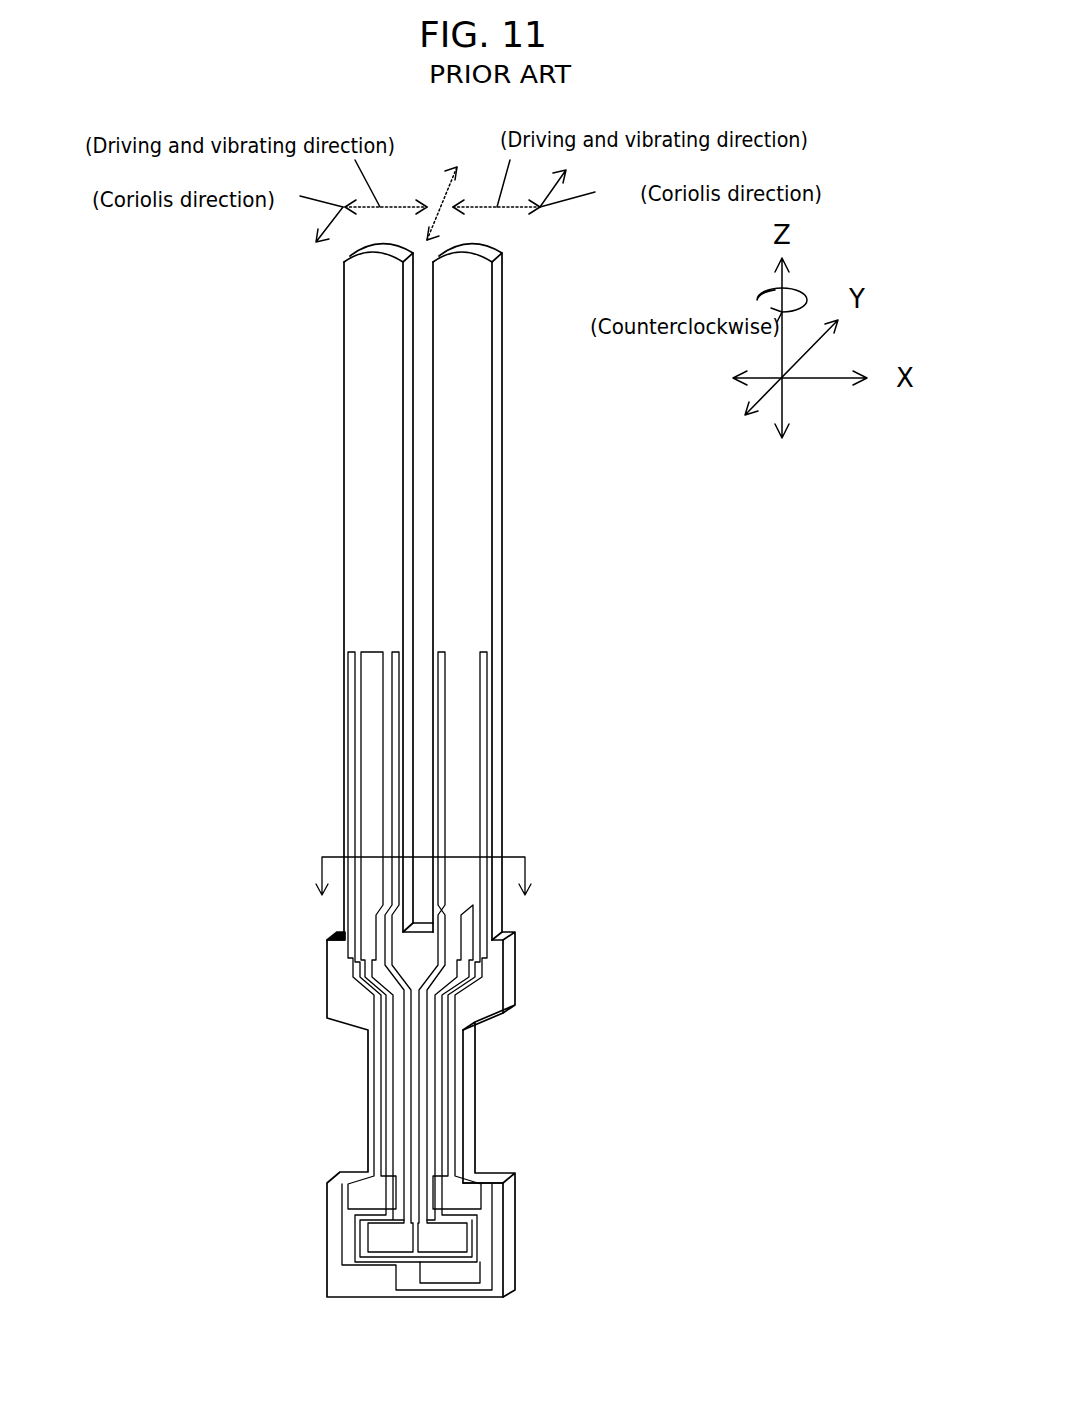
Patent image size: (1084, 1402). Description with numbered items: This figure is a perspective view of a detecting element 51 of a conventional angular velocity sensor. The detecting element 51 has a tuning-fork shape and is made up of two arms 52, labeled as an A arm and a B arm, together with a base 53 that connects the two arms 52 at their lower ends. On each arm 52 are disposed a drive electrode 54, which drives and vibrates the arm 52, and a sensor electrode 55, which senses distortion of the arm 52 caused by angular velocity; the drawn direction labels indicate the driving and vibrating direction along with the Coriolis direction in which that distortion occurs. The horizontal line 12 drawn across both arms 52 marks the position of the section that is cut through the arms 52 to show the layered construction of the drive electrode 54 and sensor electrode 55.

The detecting element 51 is at (198, 262).
The arm 52 is at (565, 262).
The base 53 is at (565, 955).
The drive electrode 54 is at (395, 737).
The sensor electrode 55 is at (372, 670).
The section line 12 is at (425, 894).